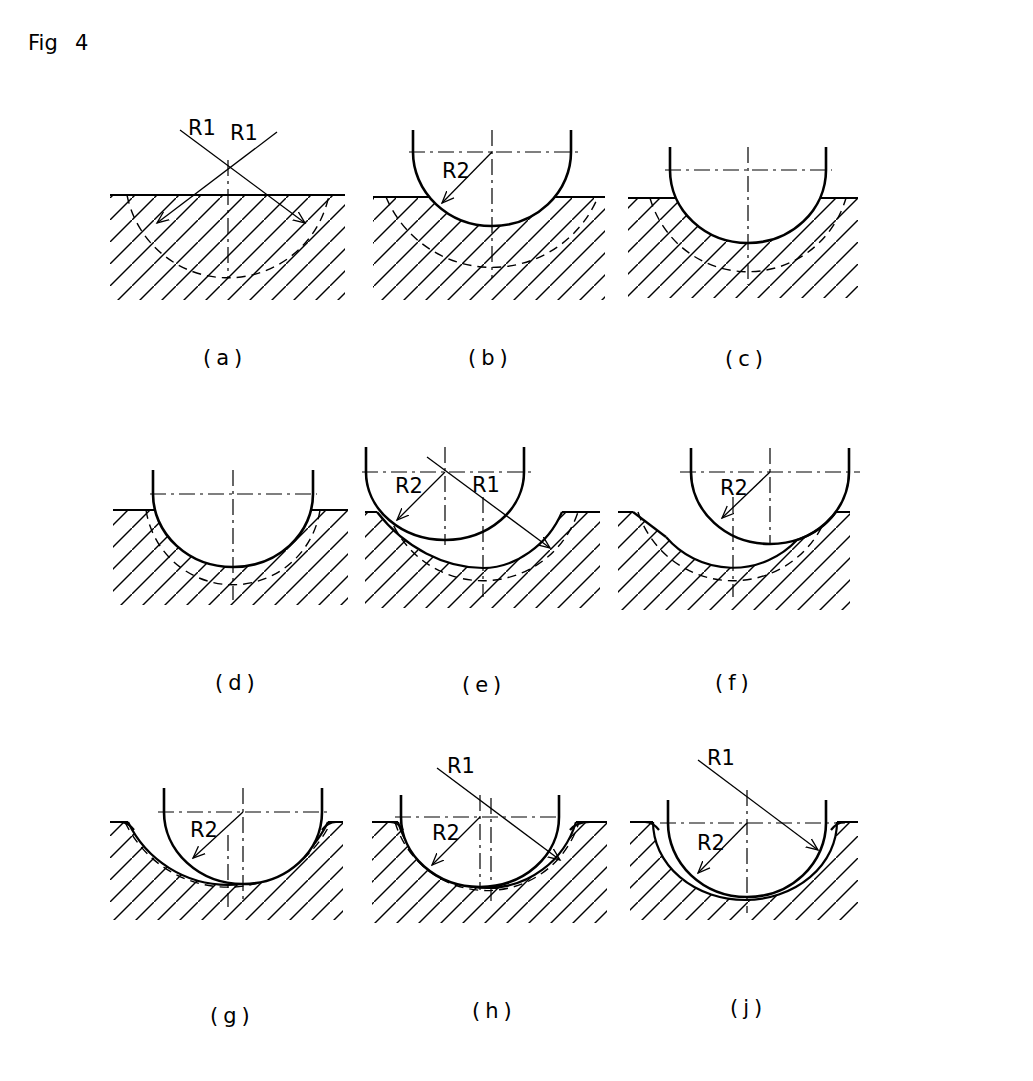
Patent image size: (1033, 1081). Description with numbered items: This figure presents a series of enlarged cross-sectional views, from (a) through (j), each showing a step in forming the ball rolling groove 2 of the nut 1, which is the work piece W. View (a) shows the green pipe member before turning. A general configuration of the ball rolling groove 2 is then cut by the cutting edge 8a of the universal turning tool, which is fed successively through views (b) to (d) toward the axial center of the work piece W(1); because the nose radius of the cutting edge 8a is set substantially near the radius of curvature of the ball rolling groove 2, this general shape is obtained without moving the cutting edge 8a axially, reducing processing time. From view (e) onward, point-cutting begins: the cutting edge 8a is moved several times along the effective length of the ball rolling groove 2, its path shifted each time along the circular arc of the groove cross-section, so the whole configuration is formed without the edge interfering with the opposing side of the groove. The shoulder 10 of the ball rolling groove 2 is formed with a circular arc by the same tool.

The ball rolling groove 2 is at (288, 276).
The cutting edge 8a is at (548, 168).
The shoulder 10 is at (650, 527).
The work piece W is at (484, 580).
The nut 1 is at (160, 270).